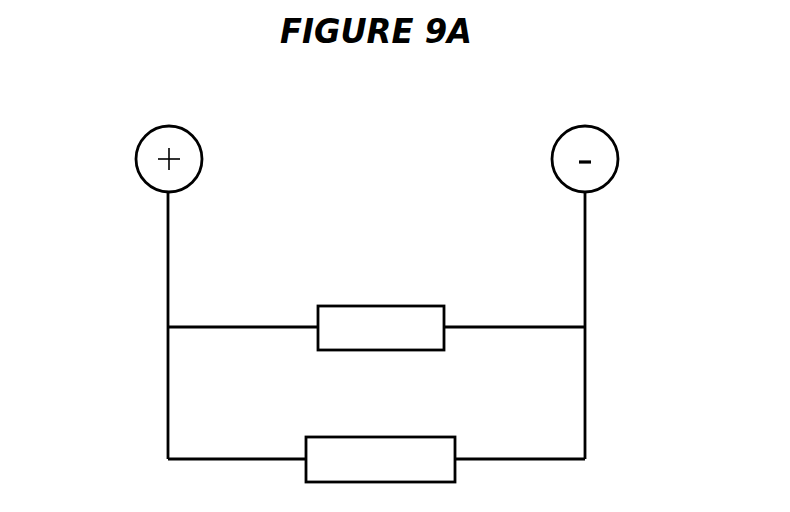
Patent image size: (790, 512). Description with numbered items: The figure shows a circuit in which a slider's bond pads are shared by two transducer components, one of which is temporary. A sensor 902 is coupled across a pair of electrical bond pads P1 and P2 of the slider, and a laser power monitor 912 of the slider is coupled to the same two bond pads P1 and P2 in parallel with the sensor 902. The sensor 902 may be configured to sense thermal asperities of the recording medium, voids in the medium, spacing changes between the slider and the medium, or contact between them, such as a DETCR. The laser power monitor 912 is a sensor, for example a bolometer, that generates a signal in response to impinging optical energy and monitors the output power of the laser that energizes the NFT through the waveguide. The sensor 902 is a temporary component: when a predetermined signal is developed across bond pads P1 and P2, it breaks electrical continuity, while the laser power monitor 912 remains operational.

The electrical bond pad P1 is at (137, 158).
The electrical bond pad P2 is at (617, 145).
The sensor 902 is at (403, 306).
The laser power monitor 912 is at (388, 437).